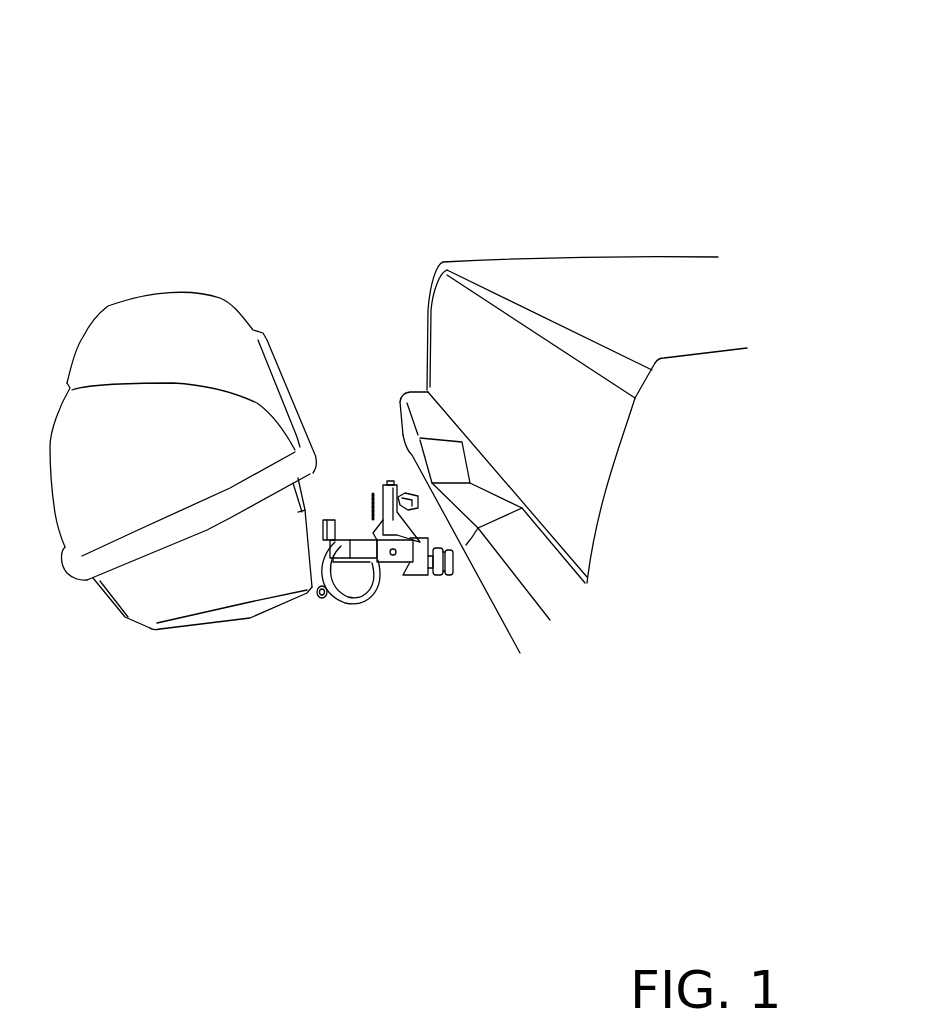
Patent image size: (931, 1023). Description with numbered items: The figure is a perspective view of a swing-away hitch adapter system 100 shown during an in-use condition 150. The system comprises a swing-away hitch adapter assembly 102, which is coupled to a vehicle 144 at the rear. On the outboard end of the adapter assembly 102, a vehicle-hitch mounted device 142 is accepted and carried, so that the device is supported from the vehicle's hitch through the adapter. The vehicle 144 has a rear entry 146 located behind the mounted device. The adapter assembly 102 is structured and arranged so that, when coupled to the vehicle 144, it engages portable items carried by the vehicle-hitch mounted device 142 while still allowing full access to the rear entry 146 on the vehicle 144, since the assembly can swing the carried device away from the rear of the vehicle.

The swing-away hitch adapter system 100 is at (419, 374).
The swing-away hitch adapter assembly 102 is at (368, 478).
The vehicle-hitch mounted device 142 is at (198, 316).
The vehicle 144 is at (662, 538).
The rear entry 146 is at (537, 413).
The in-use condition 150 is at (597, 334).